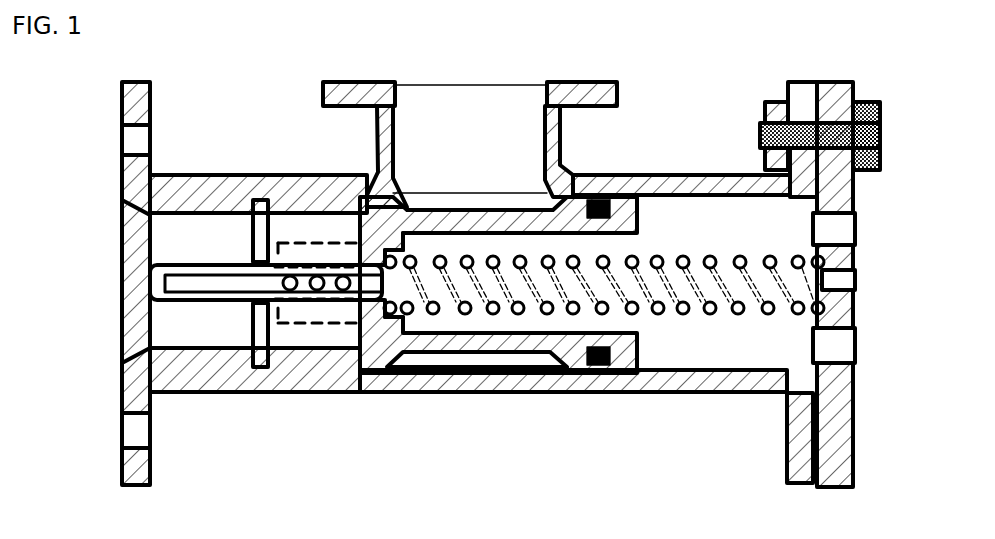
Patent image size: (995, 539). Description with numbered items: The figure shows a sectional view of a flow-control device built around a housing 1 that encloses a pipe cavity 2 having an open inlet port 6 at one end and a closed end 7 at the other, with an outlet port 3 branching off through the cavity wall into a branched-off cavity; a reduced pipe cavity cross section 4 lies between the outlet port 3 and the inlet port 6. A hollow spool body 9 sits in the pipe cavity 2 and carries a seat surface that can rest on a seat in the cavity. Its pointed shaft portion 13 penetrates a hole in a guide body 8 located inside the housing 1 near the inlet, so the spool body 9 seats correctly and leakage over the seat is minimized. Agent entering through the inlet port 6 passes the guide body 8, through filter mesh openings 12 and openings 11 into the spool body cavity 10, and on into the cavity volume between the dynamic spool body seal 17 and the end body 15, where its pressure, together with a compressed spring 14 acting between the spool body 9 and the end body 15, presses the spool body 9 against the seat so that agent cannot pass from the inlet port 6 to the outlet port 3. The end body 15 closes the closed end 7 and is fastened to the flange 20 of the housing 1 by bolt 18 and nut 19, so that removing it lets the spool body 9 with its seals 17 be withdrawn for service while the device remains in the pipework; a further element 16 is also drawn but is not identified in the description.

The housing 1 is at (335, 375).
The pipe cavity 2 is at (698, 355).
The outlet port 3 is at (467, 180).
The reduced pipe cavity cross section 4 is at (330, 207).
The inlet port 6 is at (138, 318).
The closed end 7 is at (804, 416).
The guide body 8 is at (250, 339).
The spool body 9 is at (517, 340).
The spool body cavity 10 is at (423, 323).
The openings 11 is at (313, 300).
The filter mesh openings 12 is at (297, 240).
The shaft portion 13 is at (180, 302).
The compressed spring 14 is at (661, 322).
The end body 15 is at (832, 473).
The retaining bracket 16 is at (787, 475).
The dynamic spool body seal 17 is at (593, 370).
The bolt 18 is at (787, 100).
The nut 19 is at (760, 135).
The flange 20 is at (578, 92).